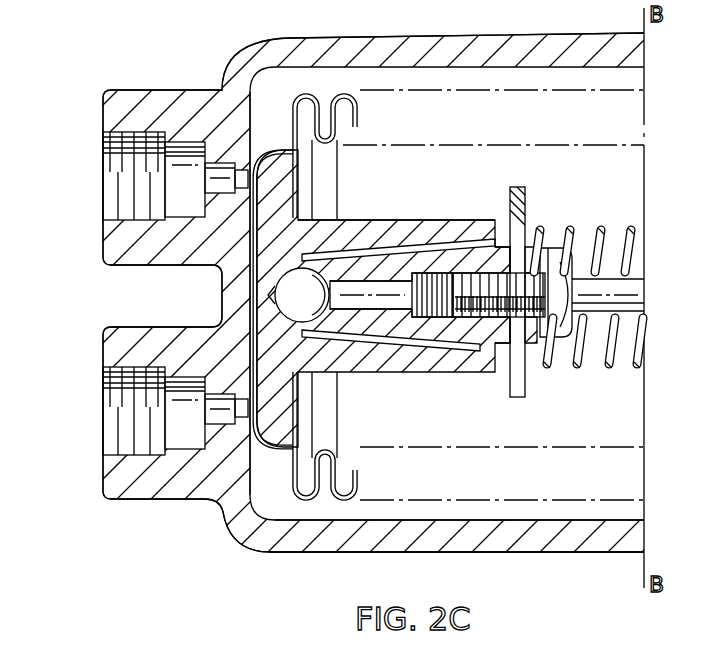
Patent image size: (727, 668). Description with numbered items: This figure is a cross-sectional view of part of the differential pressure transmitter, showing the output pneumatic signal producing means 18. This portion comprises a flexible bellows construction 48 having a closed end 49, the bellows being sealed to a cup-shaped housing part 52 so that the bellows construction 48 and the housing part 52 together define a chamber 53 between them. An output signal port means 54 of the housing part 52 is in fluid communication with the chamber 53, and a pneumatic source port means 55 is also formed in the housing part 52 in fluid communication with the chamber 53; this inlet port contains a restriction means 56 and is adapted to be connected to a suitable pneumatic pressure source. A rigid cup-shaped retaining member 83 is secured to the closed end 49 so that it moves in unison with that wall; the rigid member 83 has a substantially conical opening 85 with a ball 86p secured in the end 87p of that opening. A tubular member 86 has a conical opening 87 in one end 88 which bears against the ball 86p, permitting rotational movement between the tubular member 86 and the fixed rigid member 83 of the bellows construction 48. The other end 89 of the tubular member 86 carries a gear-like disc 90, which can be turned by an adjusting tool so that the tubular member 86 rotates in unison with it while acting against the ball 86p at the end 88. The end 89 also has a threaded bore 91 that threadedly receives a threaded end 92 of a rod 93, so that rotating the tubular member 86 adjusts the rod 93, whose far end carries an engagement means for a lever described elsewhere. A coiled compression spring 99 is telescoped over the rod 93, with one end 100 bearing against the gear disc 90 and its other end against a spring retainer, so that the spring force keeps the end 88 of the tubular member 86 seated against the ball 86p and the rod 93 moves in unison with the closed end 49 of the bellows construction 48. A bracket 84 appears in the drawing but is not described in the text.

The output pneumatic signal producing means 18 is at (275, 555).
The flexible bellows construction 48 is at (346, 93).
The closed end 49 is at (248, 278).
The cup-shaped housing part 52 is at (490, 33).
The chamber 53 is at (542, 520).
The output signal port means 54 is at (128, 452).
The pneumatic source port means 55 is at (128, 218).
The restriction means 56 is at (243, 167).
The rigid cup-shaped retaining member 83 is at (398, 220).
The bracket 84 is at (264, 238).
The conical opening 85 is at (402, 252).
The tubular member 86 is at (453, 347).
The ball 86p is at (393, 182).
The conical opening 87 is at (322, 333).
The end of the opening 87p is at (272, 297).
The end of the tubular member 88 is at (343, 328).
The other end of the tubular member 89 is at (508, 258).
The gear-like disc 90 is at (523, 205).
The threaded bore 91 is at (417, 318).
The threaded end 92 is at (507, 342).
The rod 93 is at (630, 289).
The coiled compression spring 99 is at (597, 228).
The one end of the spring 100 is at (538, 250).